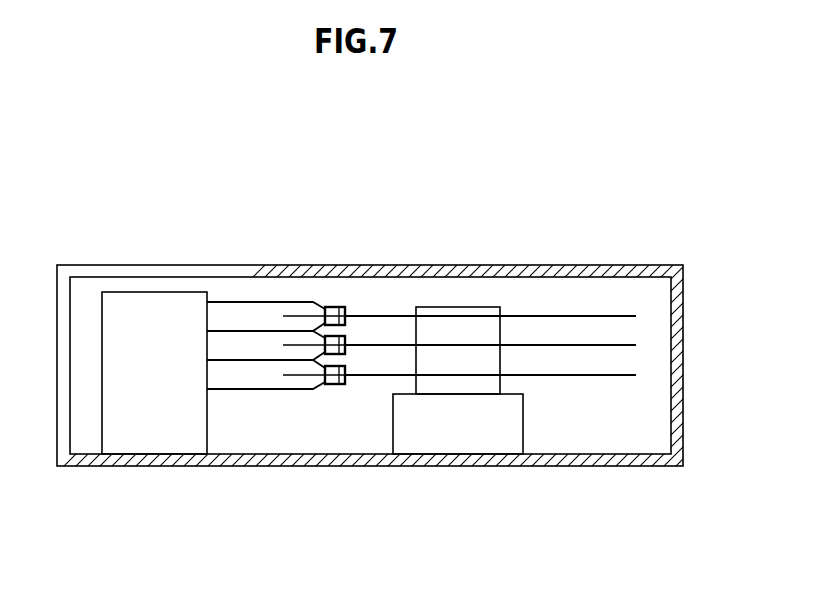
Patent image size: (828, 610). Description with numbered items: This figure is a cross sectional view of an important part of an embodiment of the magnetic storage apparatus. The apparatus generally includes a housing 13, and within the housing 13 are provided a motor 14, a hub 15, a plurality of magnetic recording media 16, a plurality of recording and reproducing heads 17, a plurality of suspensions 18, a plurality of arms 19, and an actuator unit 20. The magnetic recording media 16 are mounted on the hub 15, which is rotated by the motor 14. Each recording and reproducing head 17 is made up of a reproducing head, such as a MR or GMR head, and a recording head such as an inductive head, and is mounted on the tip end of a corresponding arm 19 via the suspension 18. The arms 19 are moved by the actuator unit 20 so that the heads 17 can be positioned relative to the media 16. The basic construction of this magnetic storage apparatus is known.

The housing 13 is at (677, 439).
The motor 14 is at (459, 447).
The hub 15 is at (459, 307).
The magnetic recording media 16 is at (572, 315).
The recording and reproducing head 17 is at (347, 306).
The suspension 18 is at (325, 305).
The arm 19 is at (243, 301).
The actuator unit 20 is at (150, 445).